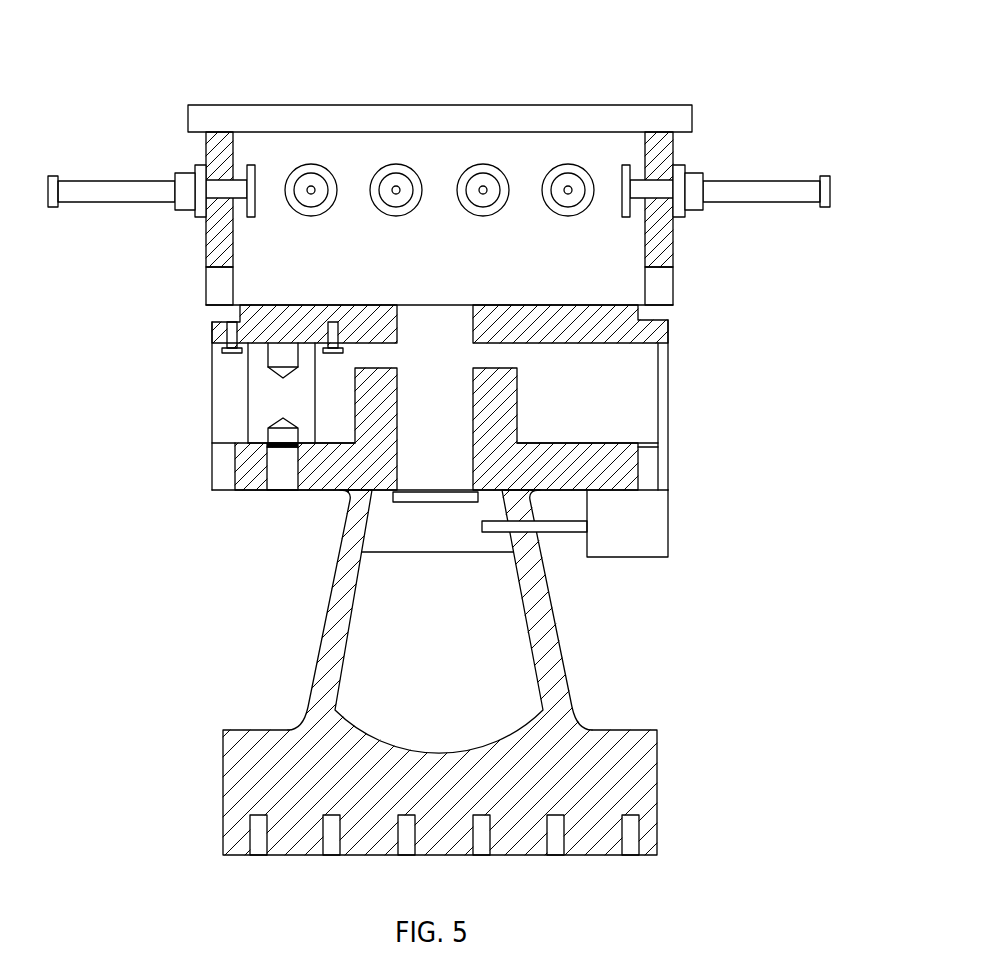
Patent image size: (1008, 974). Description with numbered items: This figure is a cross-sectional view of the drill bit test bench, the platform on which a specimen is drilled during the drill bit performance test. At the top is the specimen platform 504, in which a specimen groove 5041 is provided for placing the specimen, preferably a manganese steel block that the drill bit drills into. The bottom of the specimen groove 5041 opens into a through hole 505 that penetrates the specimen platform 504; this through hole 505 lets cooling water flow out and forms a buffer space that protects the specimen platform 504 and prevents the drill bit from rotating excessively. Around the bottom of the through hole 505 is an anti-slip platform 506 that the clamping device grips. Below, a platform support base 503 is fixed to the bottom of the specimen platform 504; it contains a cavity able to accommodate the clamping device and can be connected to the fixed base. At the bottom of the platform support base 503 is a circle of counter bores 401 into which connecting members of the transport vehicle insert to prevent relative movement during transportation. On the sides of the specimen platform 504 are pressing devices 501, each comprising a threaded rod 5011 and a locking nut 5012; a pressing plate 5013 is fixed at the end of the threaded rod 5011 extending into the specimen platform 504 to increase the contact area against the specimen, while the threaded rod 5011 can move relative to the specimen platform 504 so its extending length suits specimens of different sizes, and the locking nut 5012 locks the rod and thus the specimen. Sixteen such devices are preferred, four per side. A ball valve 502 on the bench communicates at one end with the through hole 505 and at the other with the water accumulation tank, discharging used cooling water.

The counter bores 401 is at (260, 833).
The pressing device 501 is at (461, 142).
The threaded rod 5011 is at (737, 197).
The locking nut 5012 is at (698, 180).
The pressing plate 5013 is at (627, 175).
The ball valve 502 is at (625, 530).
The platform support base 503 is at (563, 678).
The specimen platform 504 is at (370, 120).
The specimen groove 5041 is at (407, 243).
The through hole 505 is at (453, 427).
The anti-slip platform 506 is at (397, 498).